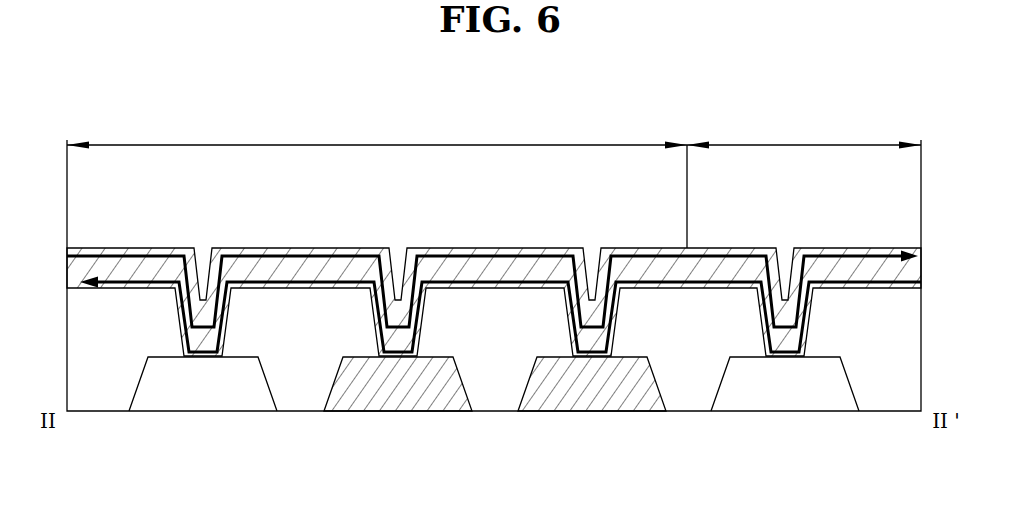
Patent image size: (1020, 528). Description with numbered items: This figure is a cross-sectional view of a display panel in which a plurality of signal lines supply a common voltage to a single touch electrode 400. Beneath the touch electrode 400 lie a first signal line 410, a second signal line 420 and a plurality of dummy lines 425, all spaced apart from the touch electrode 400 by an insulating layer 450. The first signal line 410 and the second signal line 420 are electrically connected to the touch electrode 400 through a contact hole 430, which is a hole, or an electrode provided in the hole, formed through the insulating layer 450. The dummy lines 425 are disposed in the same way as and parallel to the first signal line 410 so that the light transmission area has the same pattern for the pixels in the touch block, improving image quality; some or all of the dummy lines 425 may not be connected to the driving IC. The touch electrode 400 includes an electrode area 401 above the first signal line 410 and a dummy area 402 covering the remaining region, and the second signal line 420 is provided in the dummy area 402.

The touch electrode 400 is at (860, 272).
The electrode area 401 is at (804, 131).
The dummy area 402 is at (377, 181).
The first signal line 410 is at (787, 393).
The second signal line 420 is at (225, 393).
The dummy line 425 is at (405, 393).
The contact hole 430 is at (170, 328).
The insulating layer 450 is at (883, 372).